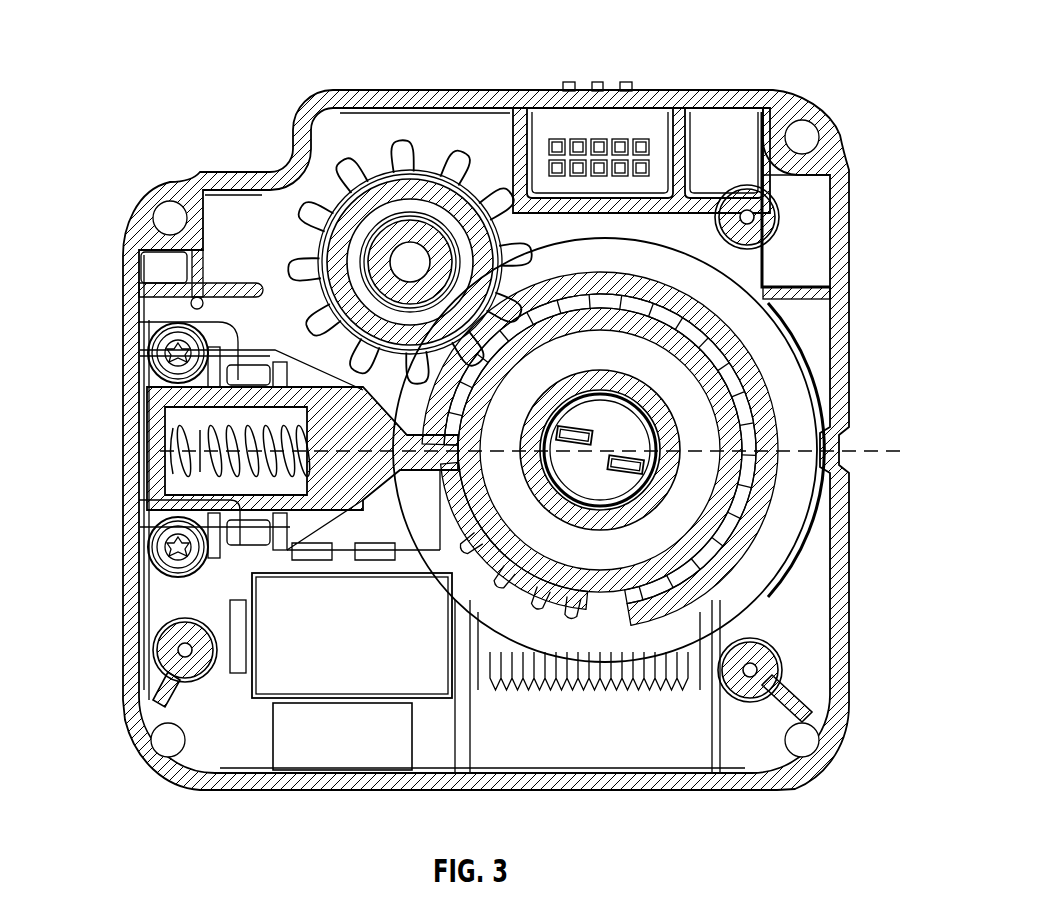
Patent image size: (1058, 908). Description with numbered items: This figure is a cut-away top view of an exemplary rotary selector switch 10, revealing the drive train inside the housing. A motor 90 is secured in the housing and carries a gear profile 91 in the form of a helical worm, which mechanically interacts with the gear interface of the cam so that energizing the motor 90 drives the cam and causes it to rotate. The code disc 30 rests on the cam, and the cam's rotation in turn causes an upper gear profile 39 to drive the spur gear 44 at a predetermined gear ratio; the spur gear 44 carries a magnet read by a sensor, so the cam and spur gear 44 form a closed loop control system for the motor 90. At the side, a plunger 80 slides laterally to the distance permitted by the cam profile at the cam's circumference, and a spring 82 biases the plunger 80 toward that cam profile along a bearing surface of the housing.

The rotary selector switch 10 is at (824, 62).
The code disc 30 is at (646, 450).
The upper gear profile 39 is at (520, 593).
The spur gear 44 is at (405, 148).
The plunger 80 is at (383, 440).
The spring 82 is at (172, 432).
The motor 90 is at (357, 683).
The gear profile 91 is at (567, 692).